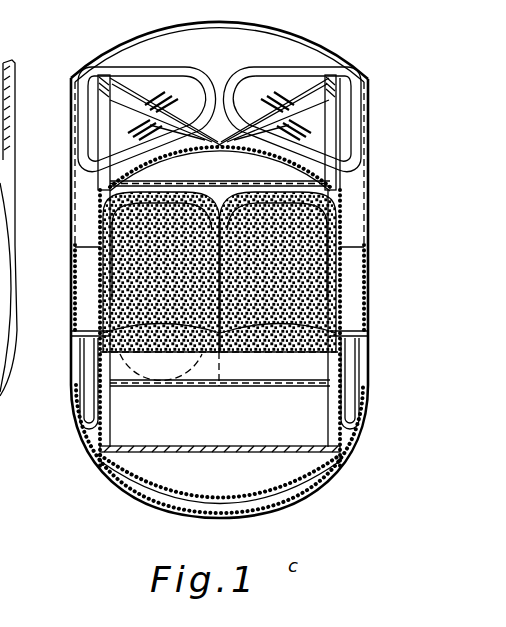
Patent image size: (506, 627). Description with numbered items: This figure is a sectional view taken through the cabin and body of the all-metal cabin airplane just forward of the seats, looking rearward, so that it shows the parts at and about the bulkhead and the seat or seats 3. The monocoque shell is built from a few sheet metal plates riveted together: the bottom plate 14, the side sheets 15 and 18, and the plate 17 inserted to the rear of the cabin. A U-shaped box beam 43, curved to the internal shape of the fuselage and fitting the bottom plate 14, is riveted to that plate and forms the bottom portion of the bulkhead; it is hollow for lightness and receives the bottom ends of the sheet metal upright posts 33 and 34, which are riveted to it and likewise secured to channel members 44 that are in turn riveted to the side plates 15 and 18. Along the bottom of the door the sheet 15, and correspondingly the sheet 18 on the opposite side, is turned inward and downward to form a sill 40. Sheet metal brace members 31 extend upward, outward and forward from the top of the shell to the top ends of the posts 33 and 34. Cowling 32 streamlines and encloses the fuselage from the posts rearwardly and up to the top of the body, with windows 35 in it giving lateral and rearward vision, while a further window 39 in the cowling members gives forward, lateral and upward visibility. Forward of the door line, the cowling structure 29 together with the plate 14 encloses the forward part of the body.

The seat 3 is at (200, 204).
The bottom plate 14 is at (110, 480).
The sheet metal plate 15 is at (75, 247).
The sheet metal plate 17 is at (224, 178).
The sheet metal plate 18 is at (366, 242).
The cowling structure 29 is at (13, 293).
The brace members 31 is at (137, 90).
The cowling 32 is at (72, 180).
The upright post 33 is at (105, 98).
The upright post 34 is at (334, 118).
The windows 35 is at (88, 117).
The window 39 is at (0, 150).
The sill 40 is at (72, 343).
The U-shaped box beam 43 is at (300, 490).
The channel members 44 is at (72, 295).